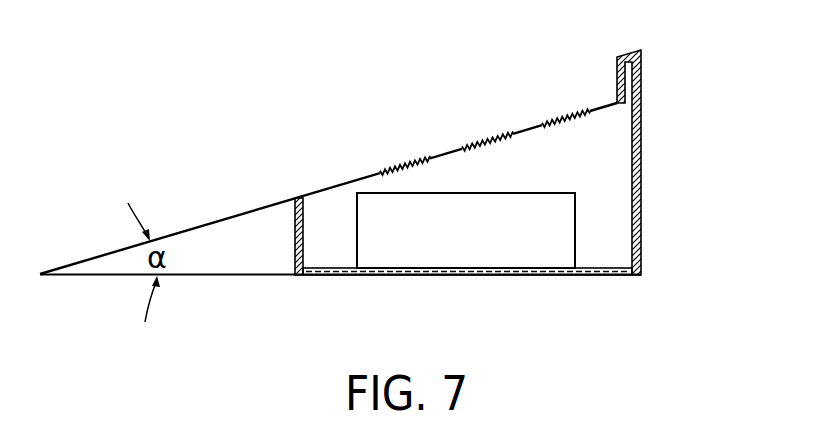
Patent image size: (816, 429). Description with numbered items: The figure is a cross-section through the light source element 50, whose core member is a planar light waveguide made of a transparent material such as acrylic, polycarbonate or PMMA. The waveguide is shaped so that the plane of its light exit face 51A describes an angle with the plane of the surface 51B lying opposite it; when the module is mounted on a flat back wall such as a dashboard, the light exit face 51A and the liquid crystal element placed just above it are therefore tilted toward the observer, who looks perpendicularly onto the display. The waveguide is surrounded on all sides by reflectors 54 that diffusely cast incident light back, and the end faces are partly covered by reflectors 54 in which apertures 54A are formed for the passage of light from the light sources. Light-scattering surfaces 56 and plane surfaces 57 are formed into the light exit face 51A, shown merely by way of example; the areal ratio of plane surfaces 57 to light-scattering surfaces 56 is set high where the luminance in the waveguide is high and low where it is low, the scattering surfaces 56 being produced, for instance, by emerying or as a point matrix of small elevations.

The light source element 50 is at (360, 93).
The light-scattering surfaces 56 is at (477, 143).
The plane surfaces 57 is at (530, 129).
The reflectors 54 is at (505, 199).
The light exit face 51A is at (315, 200).
The surface lying opposite the light exit face 51B is at (610, 268).
The apertures 54A is at (480, 248).